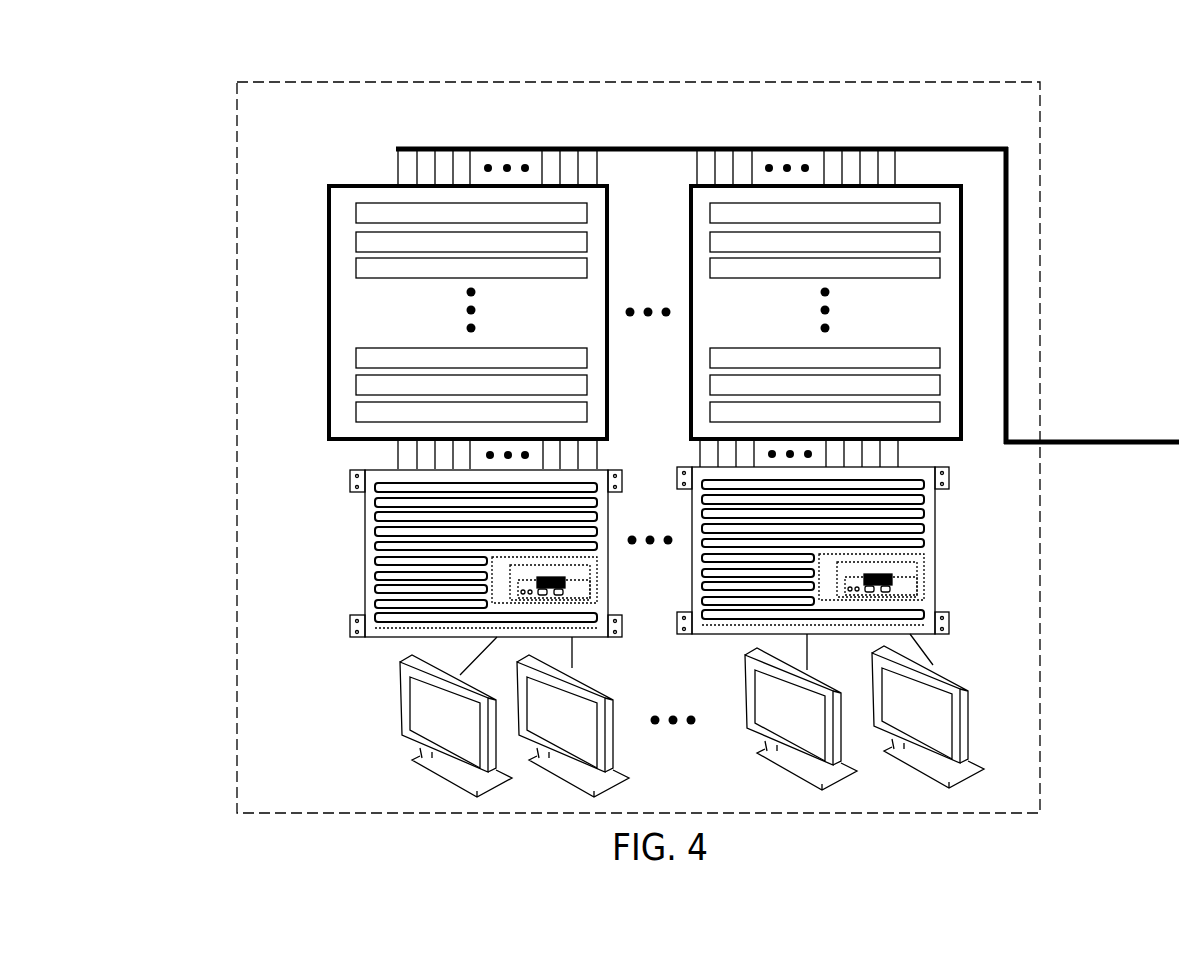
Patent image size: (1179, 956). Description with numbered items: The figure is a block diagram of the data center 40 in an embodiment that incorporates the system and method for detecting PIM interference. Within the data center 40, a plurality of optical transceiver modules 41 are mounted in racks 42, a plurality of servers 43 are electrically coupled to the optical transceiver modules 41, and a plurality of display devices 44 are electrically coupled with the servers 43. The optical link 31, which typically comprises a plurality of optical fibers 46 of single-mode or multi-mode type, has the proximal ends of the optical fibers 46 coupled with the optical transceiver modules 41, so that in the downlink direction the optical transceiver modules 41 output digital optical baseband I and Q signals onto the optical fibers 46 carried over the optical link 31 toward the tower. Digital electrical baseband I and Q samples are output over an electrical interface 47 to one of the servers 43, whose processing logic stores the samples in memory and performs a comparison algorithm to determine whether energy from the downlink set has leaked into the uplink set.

The optical link 31 is at (1103, 441).
The data center 40 is at (226, 98).
The optical transceiver modules 41 is at (587, 211).
The racks 42 is at (603, 186).
The servers 43 is at (608, 512).
The display devices 44 is at (470, 681).
The optical fibers 46 is at (392, 164).
The electrical interface 47 is at (380, 452).